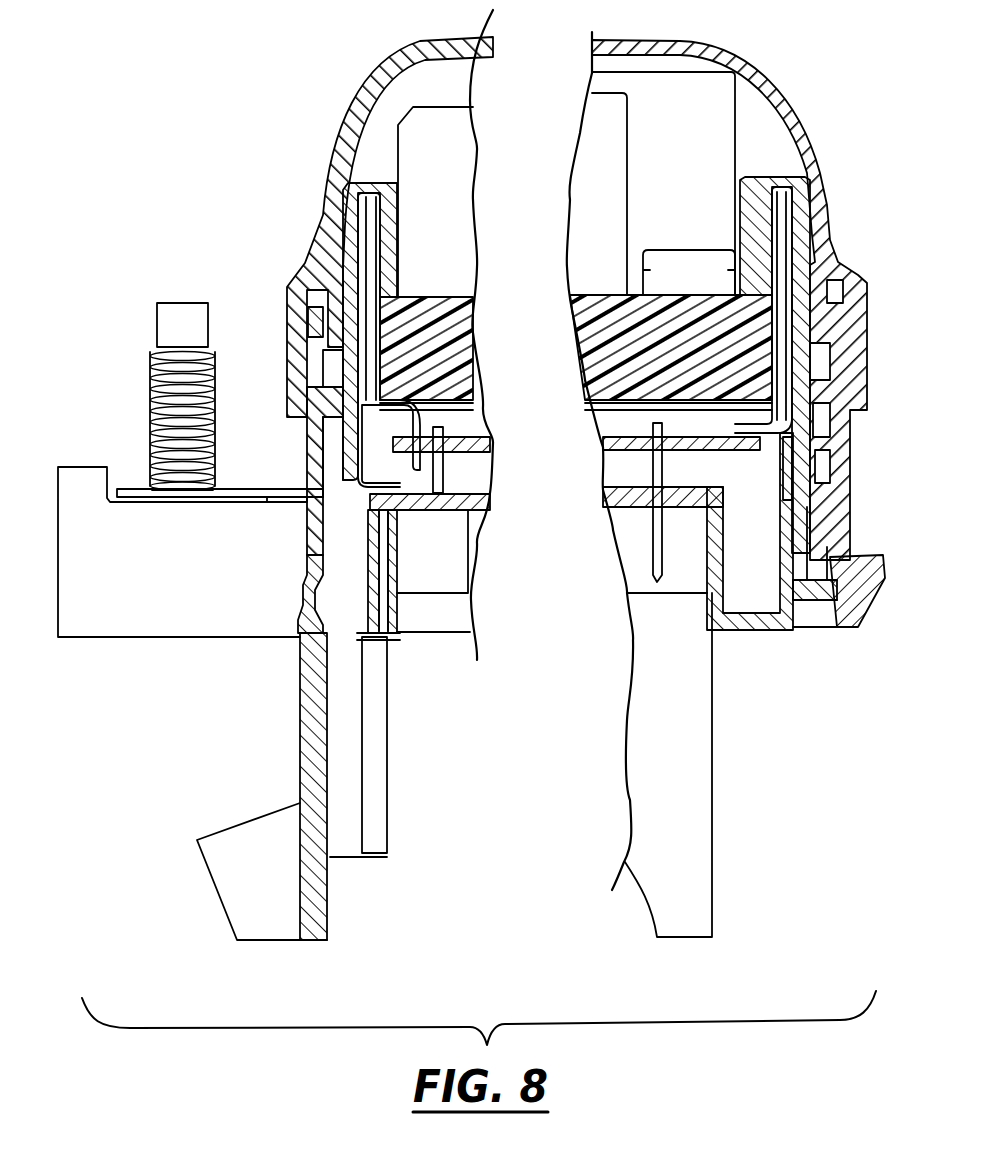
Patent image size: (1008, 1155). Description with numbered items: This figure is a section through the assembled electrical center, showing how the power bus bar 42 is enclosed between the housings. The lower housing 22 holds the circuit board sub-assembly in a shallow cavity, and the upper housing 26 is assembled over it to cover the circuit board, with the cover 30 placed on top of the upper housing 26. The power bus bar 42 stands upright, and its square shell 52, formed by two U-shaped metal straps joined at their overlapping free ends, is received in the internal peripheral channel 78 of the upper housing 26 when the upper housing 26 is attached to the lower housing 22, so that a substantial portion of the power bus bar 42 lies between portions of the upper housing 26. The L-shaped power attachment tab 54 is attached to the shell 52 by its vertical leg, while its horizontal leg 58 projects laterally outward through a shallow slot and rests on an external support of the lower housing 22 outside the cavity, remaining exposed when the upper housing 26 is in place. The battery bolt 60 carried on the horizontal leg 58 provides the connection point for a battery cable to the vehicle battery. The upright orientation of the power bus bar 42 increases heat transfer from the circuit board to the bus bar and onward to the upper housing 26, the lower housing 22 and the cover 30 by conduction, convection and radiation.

The cover 30 is at (817, 145).
The internal peripheral channel 78 is at (782, 212).
The upper housing 26 is at (797, 236).
The square shell 52 is at (365, 215).
The battery bolt 60 is at (165, 318).
The power attachment tab 54 is at (175, 441).
The horizontal leg 58 is at (137, 487).
The lower housing 22 is at (445, 505).
The power bus bar 42 is at (238, 500).